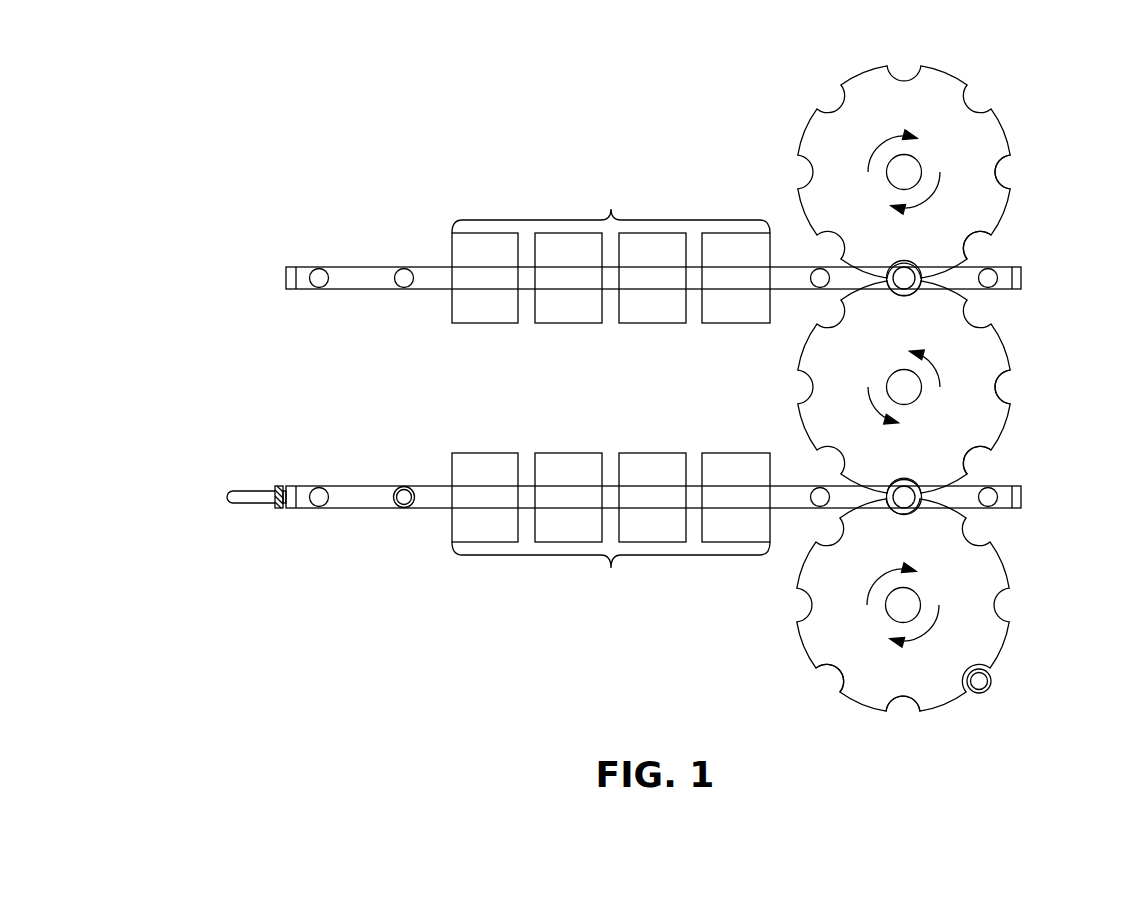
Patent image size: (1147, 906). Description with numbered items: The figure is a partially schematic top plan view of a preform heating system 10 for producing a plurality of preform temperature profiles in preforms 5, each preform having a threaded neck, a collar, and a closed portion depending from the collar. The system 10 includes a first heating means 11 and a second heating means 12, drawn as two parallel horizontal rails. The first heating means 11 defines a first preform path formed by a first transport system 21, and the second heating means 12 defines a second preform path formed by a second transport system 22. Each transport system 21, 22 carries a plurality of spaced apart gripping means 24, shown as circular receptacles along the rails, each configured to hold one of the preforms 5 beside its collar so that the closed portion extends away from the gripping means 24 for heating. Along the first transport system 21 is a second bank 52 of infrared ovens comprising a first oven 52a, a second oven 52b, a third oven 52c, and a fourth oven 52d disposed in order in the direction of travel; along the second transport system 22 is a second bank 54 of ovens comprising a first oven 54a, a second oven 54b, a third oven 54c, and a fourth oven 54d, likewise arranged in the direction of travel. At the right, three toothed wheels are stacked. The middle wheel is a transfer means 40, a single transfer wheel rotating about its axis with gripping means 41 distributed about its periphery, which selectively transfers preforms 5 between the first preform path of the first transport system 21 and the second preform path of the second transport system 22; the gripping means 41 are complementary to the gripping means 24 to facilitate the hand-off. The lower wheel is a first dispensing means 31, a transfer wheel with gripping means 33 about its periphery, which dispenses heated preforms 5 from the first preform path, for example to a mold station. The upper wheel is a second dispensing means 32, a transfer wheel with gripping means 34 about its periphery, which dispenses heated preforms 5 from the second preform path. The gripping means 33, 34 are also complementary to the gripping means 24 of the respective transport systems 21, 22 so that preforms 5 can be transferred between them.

The preform heating system 10 is at (368, 102).
The first heating means 11 is at (284, 460).
The second heating means 12 is at (284, 243).
The first transport system 21 is at (355, 497).
The second transport system 22 is at (363, 278).
The gripping means 24 is at (400, 289).
The preform 5 is at (404, 487).
The first dispensing means 31 is at (1032, 558).
The second dispensing means 32 is at (1032, 121).
The gripping means 33 is at (822, 668).
The gripping means 34 is at (972, 245).
The transfer means 40 is at (1032, 336).
The gripping means 41 is at (972, 462).
The second bank of ovens 52 is at (611, 527).
The first oven 52a is at (466, 511).
The second oven 52b is at (549, 511).
The third oven 52c is at (633, 511).
The fourth oven 52d is at (717, 511).
The second bank of ovens 54 is at (611, 251).
The first oven 54a is at (717, 294).
The second oven 54b is at (633, 294).
The third oven 54c is at (549, 294).
The fourth oven 54d is at (466, 294).